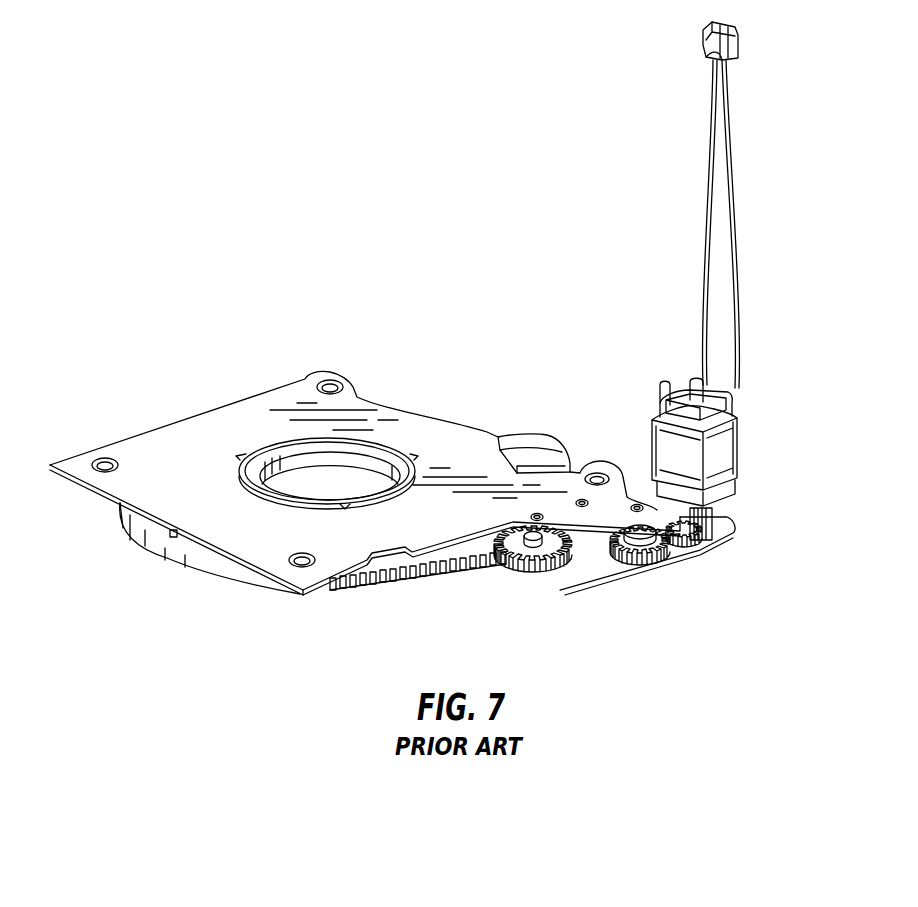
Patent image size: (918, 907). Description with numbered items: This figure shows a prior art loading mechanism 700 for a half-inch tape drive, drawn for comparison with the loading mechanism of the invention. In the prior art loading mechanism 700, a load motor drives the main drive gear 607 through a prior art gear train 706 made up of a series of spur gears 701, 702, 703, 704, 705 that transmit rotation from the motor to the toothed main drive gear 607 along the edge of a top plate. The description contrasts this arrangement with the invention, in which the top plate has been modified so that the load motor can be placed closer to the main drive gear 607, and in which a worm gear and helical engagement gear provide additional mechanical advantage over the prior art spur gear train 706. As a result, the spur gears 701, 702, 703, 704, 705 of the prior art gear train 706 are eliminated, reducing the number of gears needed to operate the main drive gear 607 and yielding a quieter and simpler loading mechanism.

The prior art loading mechanism 700 is at (527, 388).
The spur gear 701 is at (705, 549).
The spur gear 702 is at (648, 558).
The spur gear 703 is at (632, 558).
The spur gear 704 is at (573, 566).
The spur gear 705 is at (688, 548).
The prior art gear train 706 is at (500, 588).
The main drive gear 607 is at (366, 592).